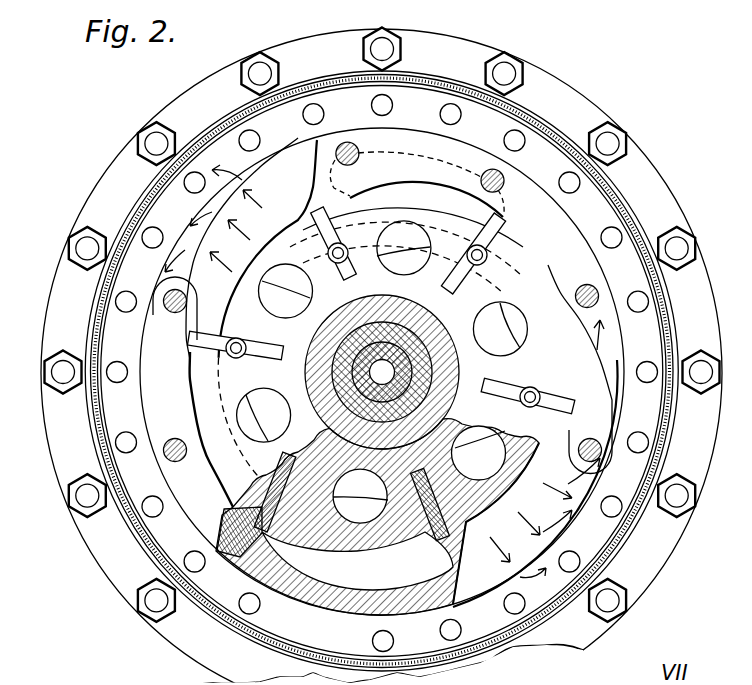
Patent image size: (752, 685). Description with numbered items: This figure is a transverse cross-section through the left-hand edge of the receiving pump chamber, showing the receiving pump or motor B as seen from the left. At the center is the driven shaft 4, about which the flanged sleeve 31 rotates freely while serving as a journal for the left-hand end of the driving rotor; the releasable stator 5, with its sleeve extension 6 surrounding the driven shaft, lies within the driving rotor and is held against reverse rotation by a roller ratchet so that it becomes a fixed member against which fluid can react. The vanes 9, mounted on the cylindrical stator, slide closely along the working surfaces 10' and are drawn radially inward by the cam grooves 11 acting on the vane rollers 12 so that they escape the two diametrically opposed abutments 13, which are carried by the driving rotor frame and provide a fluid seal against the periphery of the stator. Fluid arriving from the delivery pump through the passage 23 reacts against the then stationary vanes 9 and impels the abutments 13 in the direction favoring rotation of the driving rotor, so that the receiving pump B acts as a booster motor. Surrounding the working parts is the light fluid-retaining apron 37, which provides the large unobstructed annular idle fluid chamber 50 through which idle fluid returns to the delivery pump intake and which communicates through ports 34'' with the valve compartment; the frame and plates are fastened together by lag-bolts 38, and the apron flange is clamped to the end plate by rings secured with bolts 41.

The driven shaft 4 is at (363, 363).
The releasable stator 5 is at (382, 372).
The sleeve extension 6 is at (420, 322).
The vanes 9 is at (330, 220).
The working surfaces 10' is at (382, 322).
The cam grooves 11 is at (402, 224).
The vane rollers 12 is at (243, 356).
The abutments 13 is at (312, 190).
The passage 23 is at (370, 314).
The flanged sleeve 31 is at (382, 332).
The ports 34'' is at (382, 373).
The fluid-retaining apron 37 is at (152, 208).
The lag-bolts 38 is at (493, 170).
The bolts 41 is at (604, 142).
The annular idle fluid chamber 50 is at (382, 357).
The receiving pump or motor B is at (381, 357).